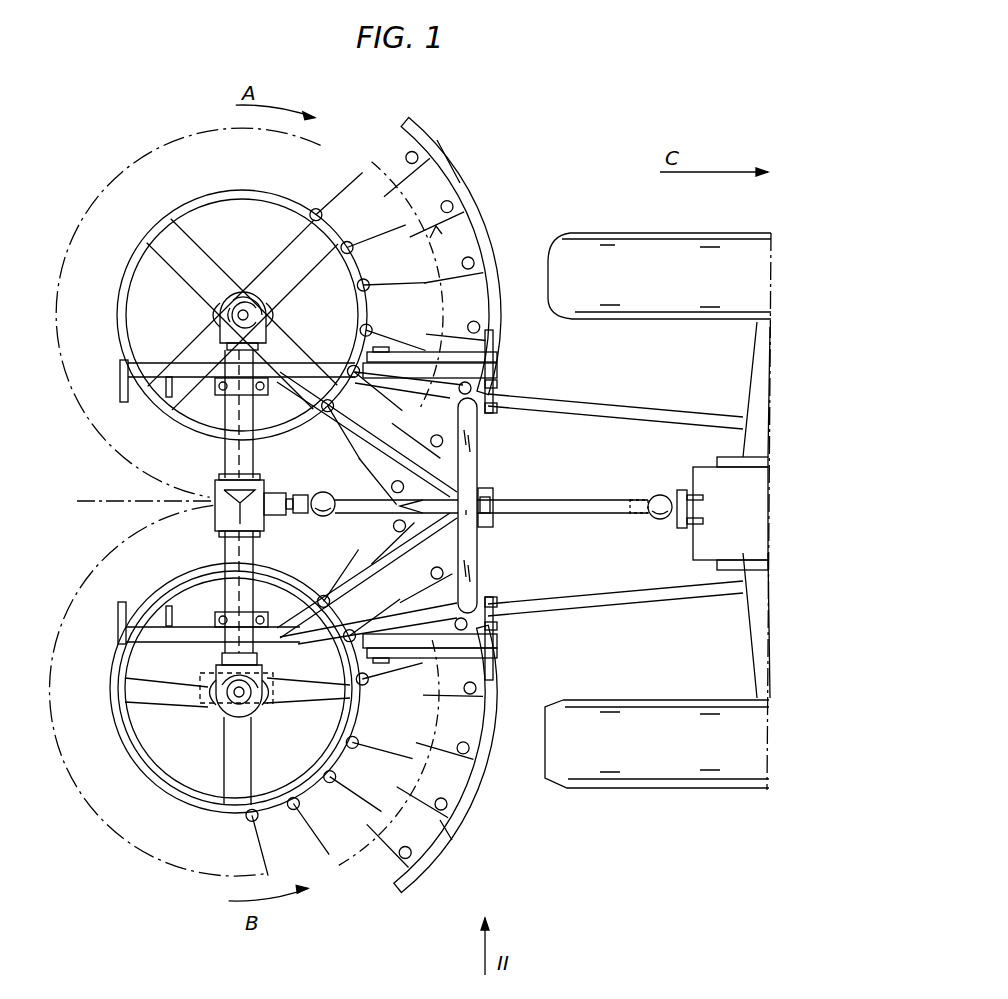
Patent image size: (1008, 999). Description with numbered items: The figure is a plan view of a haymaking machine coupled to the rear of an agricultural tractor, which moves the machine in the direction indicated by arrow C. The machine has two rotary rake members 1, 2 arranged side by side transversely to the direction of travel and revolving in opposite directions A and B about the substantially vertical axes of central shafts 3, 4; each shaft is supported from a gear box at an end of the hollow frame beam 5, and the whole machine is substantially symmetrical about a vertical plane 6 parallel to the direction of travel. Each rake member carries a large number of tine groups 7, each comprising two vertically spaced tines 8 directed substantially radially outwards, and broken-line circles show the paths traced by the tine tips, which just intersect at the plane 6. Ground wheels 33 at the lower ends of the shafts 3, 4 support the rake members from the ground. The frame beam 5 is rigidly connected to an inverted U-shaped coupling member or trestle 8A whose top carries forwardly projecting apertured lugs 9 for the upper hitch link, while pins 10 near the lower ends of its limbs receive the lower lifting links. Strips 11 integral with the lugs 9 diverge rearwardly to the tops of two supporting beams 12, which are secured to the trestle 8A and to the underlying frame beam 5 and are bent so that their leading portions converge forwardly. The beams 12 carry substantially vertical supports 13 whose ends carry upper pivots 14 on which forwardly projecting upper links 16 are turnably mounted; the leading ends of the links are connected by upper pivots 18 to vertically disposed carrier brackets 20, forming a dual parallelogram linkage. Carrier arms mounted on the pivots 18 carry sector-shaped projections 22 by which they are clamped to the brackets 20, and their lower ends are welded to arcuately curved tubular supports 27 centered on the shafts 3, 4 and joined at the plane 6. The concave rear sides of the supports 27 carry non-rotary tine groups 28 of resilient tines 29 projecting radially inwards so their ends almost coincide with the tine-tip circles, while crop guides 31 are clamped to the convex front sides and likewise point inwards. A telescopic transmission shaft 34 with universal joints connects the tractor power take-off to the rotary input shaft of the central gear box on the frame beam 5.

The rotary rake member 1 is at (170, 140).
The rotary rake member 2 is at (138, 846).
The central shaft 3 is at (244, 295).
The central shaft 4 is at (226, 712).
The hollow frame beam 5 is at (224, 452).
The vertical plane of substantial symmetry 6 is at (132, 502).
The tine group 7 is at (348, 192).
The tine 8 is at (388, 348).
The coupling member or trestle 8A is at (478, 440).
The apertured lugs 9 is at (500, 500).
The pins 10 is at (500, 404).
The strips 11 is at (352, 424).
The supporting beams 12 is at (322, 366).
The supports 13 is at (392, 392).
The upper pivots 14 is at (382, 347).
The upper links 16 is at (432, 352).
The upper pivots 18 is at (494, 350).
The carrier brackets 20 is at (499, 384).
The sector-shaped projection 22 is at (505, 394).
The arcuately curved tubular support 27 is at (456, 190).
The tine group 28 is at (390, 184).
The tine 29 is at (406, 222).
The crop guide 31 is at (432, 238).
The ground wheel 33 is at (210, 318).
The intermediate telescopic transmission shaft 34 is at (322, 518).